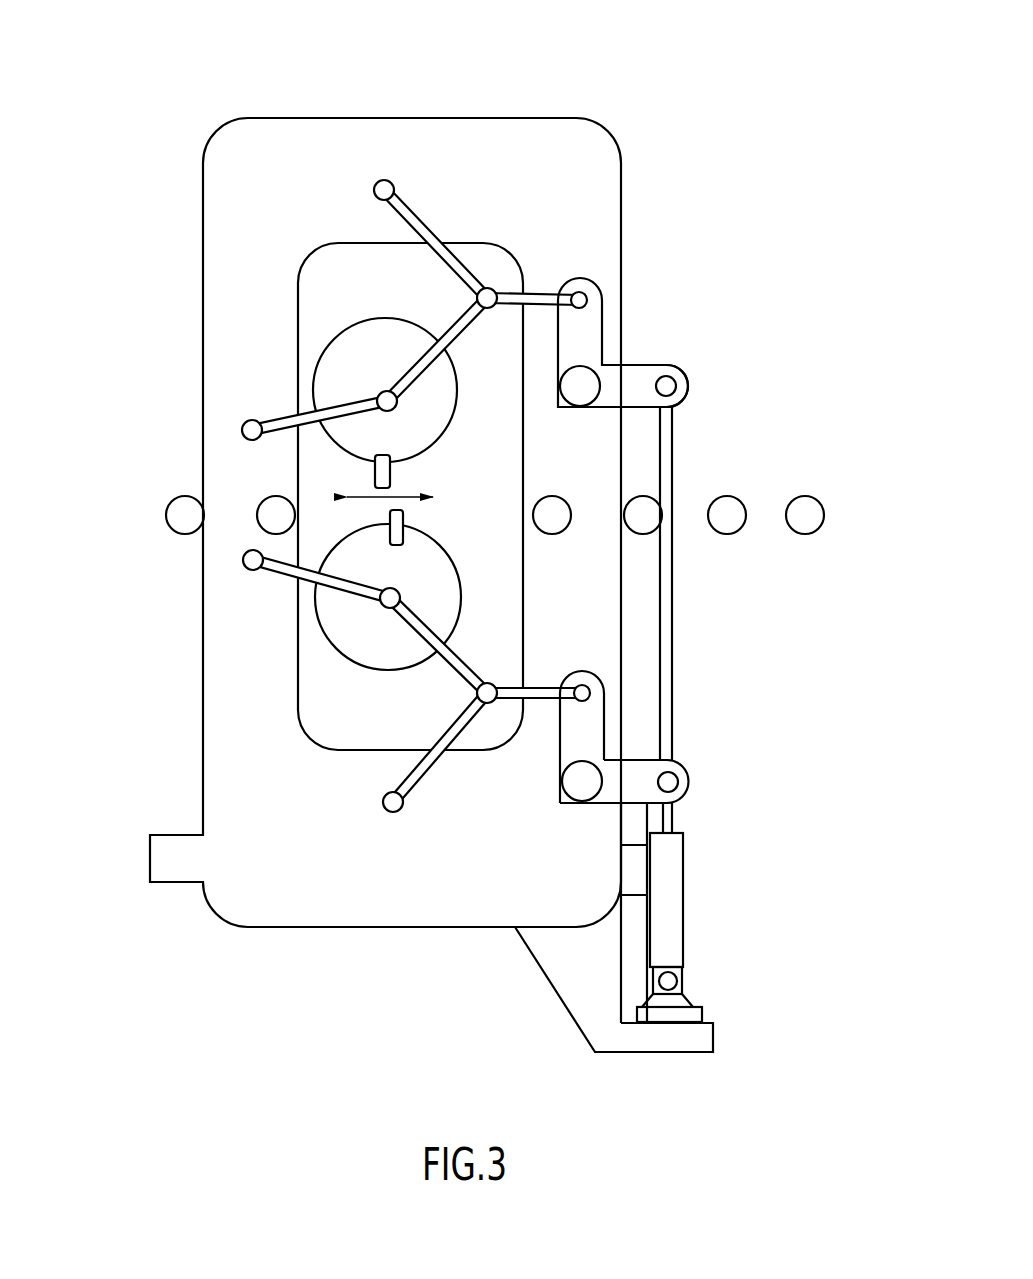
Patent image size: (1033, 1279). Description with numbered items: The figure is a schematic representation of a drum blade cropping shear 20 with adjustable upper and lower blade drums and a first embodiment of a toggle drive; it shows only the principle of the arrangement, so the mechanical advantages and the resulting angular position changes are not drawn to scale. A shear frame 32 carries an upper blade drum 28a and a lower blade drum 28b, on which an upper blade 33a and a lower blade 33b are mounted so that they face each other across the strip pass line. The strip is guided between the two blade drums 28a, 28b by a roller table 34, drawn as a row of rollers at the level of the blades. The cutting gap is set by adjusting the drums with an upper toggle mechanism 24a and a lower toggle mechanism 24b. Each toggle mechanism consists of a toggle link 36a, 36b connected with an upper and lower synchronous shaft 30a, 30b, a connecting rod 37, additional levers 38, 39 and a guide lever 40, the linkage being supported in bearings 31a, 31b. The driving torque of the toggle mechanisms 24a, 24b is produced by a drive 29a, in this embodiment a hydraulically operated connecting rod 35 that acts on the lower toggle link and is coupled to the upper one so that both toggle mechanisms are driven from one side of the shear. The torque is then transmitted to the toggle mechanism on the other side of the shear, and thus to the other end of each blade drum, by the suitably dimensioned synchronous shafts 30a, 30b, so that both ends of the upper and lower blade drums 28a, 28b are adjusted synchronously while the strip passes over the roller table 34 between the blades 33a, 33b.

The drum blade cropping shear 20 is at (208, 122).
The upper toggle mechanism 24a is at (527, 228).
The lower toggle mechanism 24b is at (493, 773).
The upper blade drum 28a is at (347, 372).
The lower blade drum 28b is at (347, 638).
The drive 29a is at (687, 893).
The upper synchronous shaft 30a is at (590, 383).
The lower synchronous shaft 30b is at (595, 773).
The bearing 31a is at (392, 815).
The bearing 31b is at (250, 562).
The shear frame 32 is at (278, 878).
The upper blade 33a is at (390, 478).
The lower blade 33b is at (403, 522).
The roller table 34 is at (179, 516).
The connecting rod 35 is at (677, 632).
The upper toggle link 36a is at (648, 372).
The lower toggle link 36b is at (647, 793).
The connecting rod 37 is at (561, 703).
The additional lever 38 is at (423, 763).
The additional lever 39 is at (460, 664).
The guide lever 40 is at (298, 579).